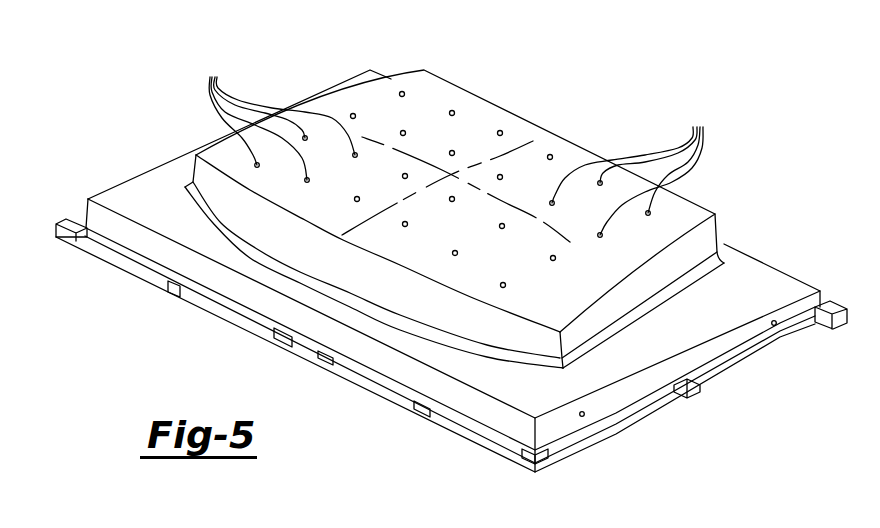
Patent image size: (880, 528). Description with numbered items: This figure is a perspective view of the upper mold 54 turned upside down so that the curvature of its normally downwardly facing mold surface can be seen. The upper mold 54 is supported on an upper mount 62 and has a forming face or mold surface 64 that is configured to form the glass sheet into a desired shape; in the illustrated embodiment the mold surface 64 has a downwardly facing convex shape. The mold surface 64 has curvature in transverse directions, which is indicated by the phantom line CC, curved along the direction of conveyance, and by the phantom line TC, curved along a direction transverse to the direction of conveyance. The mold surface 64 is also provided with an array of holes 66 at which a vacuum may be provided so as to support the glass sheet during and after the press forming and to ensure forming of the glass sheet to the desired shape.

The upper mold 54 is at (745, 221).
The upper mount 62 is at (723, 347).
The mold surface 64 is at (572, 142).
The holes 66 is at (454, 145).
The phantom line TC is at (411, 157).
The phantom line CC is at (533, 141).